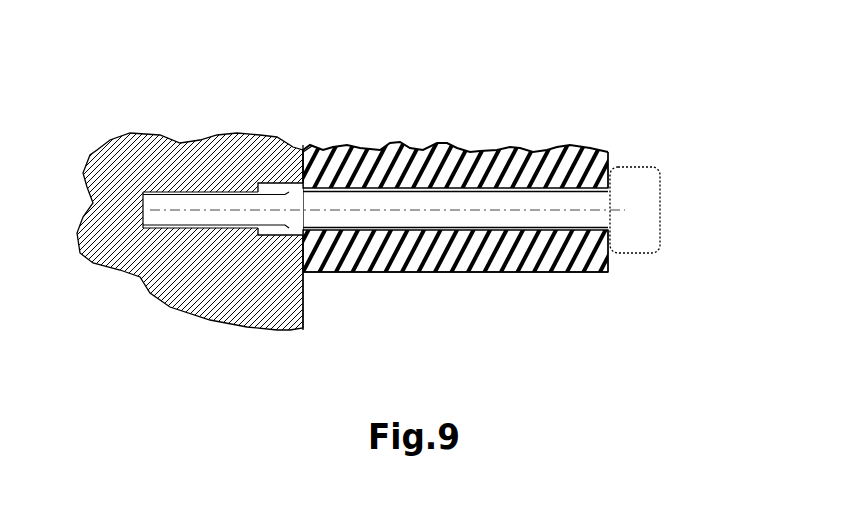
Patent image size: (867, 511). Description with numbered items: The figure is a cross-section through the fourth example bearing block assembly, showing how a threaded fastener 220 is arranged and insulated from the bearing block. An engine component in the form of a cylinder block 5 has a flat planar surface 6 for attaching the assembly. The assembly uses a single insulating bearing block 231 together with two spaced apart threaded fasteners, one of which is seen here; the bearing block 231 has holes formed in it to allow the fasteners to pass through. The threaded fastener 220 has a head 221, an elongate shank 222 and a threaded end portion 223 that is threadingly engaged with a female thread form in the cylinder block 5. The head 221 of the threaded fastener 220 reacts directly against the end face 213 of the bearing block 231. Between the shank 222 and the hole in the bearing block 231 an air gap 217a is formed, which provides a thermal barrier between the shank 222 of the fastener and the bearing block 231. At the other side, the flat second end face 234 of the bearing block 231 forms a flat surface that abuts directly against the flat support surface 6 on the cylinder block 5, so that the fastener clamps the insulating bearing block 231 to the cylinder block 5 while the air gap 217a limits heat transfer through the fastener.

The cylinder block 5 is at (93, 265).
The flat planar surface 6 is at (328, 152).
The threaded end portion 223 is at (188, 190).
The air gap 217a is at (377, 190).
The elongate shank 222 is at (520, 190).
The threaded fastener 220 is at (630, 163).
The head 221 is at (660, 173).
The end face 213 is at (610, 262).
The insulating bearing block 231 is at (473, 272).
The second end face 234 is at (305, 252).